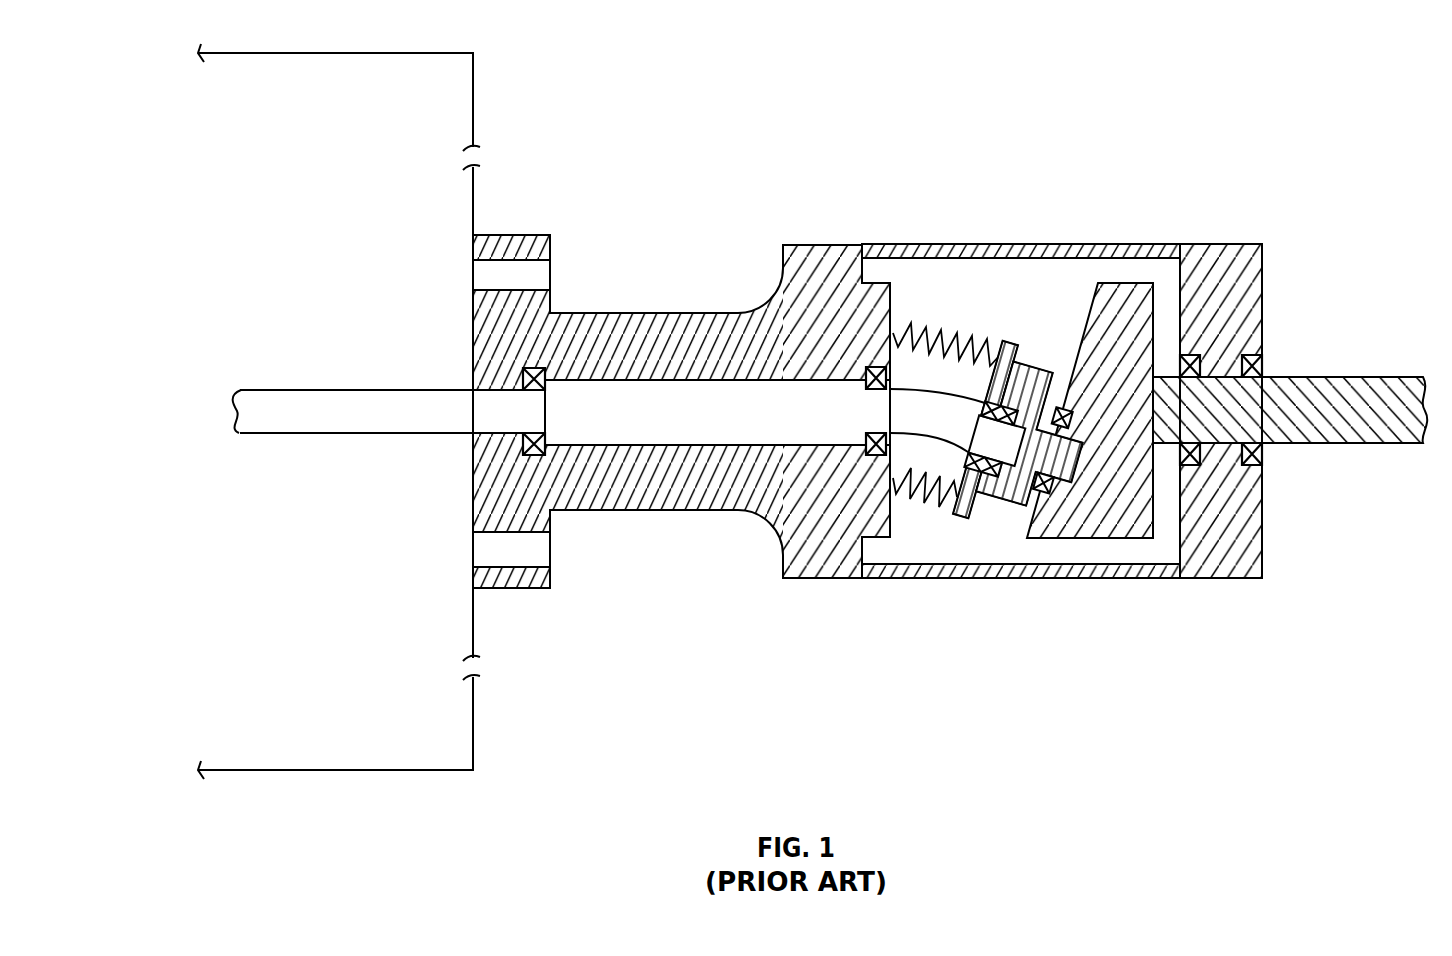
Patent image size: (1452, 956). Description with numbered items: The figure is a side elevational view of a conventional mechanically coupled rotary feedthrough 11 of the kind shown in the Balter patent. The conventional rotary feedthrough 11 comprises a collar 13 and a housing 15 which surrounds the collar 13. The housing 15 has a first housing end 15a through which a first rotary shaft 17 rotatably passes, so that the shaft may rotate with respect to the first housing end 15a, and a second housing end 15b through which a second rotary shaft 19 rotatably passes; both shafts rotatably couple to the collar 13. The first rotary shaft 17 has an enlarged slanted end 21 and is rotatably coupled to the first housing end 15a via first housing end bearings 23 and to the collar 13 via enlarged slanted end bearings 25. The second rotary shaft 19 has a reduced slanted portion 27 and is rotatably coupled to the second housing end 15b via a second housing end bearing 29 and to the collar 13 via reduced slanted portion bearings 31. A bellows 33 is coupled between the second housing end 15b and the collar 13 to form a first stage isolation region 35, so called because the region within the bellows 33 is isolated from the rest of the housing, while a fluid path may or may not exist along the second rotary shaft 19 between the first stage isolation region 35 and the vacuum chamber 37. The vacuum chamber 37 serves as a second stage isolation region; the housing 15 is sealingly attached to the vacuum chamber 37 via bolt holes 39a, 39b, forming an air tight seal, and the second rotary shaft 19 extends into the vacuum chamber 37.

The conventional rotary feedthrough 11 is at (1364, 143).
The collar 13 is at (1004, 408).
The housing 15 is at (681, 398).
The first housing end 15a is at (1266, 408).
The second housing end 15b is at (898, 290).
The first rotary shaft 17 is at (1346, 377).
The second rotary shaft 19 is at (266, 389).
The enlarged slanted end 21 is at (1030, 538).
The first housing end bearings 23 is at (1270, 460).
The enlarged slanted end bearings 25 is at (1053, 450).
The reduced slanted portion 27 is at (904, 407).
The second housing end bearing 29 is at (866, 437).
The reduced slanted portion bearings 31 is at (991, 439).
The bellows 33 is at (938, 331).
The first stage isolation region 35 is at (947, 500).
The vacuum chamber 37 is at (476, 68).
The bolt hole 39a is at (551, 280).
The bolt hole 39b is at (551, 546).